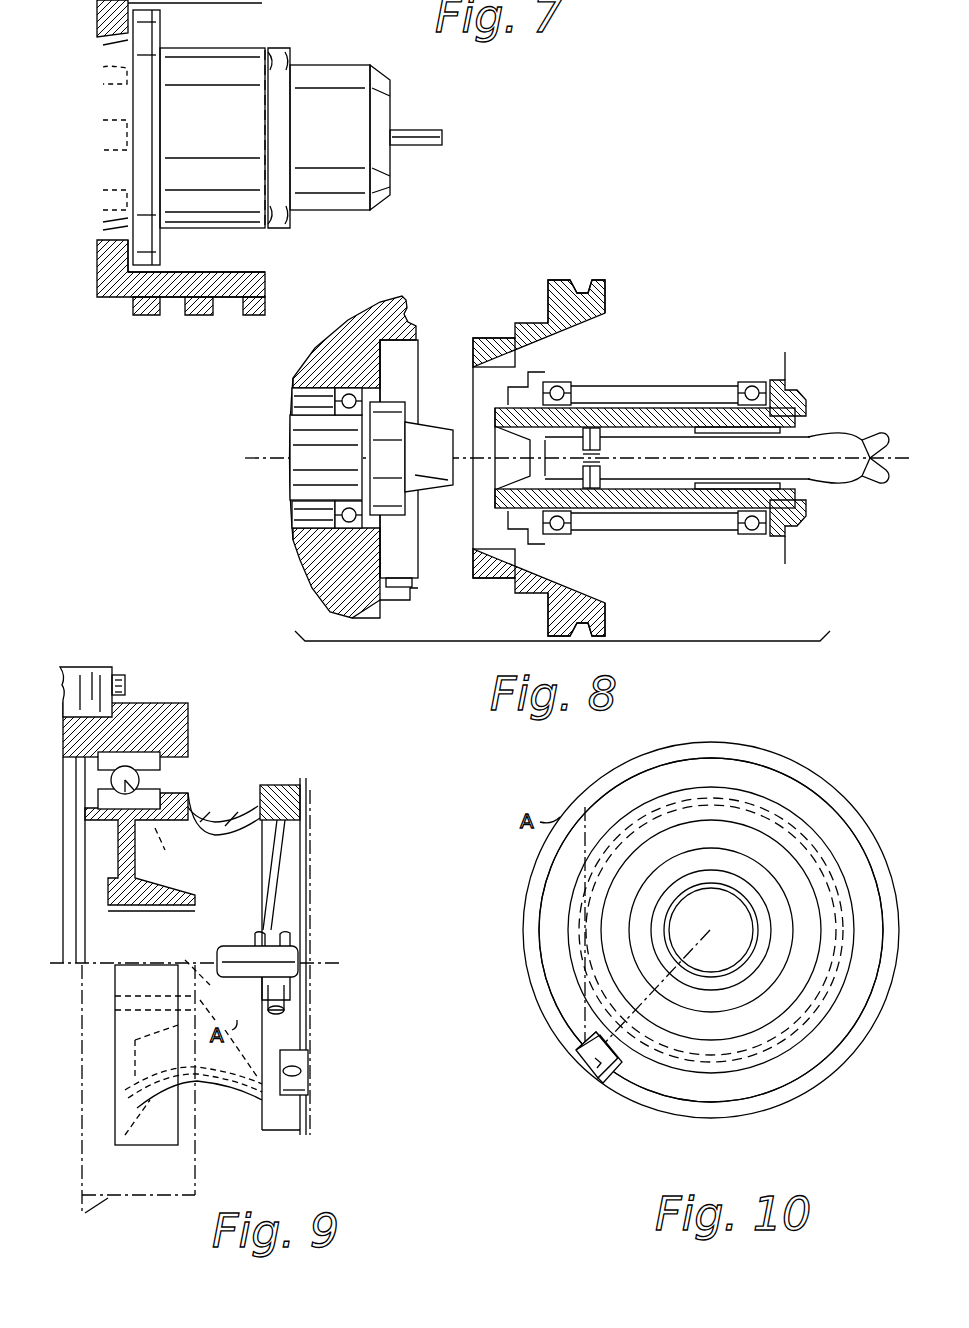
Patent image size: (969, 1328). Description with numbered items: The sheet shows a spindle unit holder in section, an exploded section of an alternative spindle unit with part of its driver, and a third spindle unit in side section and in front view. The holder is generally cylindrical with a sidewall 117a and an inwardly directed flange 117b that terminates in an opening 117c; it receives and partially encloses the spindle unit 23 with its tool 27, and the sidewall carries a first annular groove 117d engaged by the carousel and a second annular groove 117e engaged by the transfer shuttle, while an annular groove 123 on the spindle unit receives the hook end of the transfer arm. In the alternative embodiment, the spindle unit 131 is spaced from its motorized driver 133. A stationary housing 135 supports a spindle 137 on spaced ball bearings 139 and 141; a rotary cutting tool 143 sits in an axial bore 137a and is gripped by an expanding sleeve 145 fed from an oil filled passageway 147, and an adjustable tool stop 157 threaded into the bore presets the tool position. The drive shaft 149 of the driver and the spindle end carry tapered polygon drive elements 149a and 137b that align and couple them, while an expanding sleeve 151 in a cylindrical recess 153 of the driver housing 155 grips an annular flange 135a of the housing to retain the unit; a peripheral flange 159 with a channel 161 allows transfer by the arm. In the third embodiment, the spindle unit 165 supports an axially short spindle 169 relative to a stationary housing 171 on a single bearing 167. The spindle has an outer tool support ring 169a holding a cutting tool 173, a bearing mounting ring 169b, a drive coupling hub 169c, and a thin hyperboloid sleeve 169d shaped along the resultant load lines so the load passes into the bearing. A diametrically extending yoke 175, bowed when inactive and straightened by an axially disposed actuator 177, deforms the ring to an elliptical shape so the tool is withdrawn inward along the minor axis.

In FIG. 7, the spindle unit 23 is at (312, 58).
In FIG. 7, the tool 27 is at (410, 128).
In FIG. 7, the annular groove 123 is at (280, 226).
In FIG. 7, the sidewall 117a is at (245, 248).
In FIG. 7, the inwardly directed flange 117b is at (103, 262).
In FIG. 7, the opening 117c is at (115, 47).
In FIG. 7, the first annular groove 117d is at (228, 305).
In FIG. 7, the second annular groove 117e is at (183, 298).
In FIG. 8, the spindle unit 131 is at (700, 325).
In FIG. 8, the motorized driver 133 is at (412, 298).
In FIG. 8, the stationary housing 135 is at (706, 562).
In FIG. 8, the annular flange 135a is at (495, 339).
In FIG. 8, the spindle 137 is at (797, 392).
In FIG. 8, the axial bore 137a is at (668, 482).
In FIG. 8, the tapered polygon drive element 137b is at (495, 436).
In FIG. 8, the ball bearing 139 is at (555, 527).
In FIG. 8, the ball bearing 141 is at (700, 524).
In FIG. 8, the rotary cutting tool 143 is at (846, 440).
In FIG. 8, the expanding sleeve 145 is at (690, 440).
In FIG. 8, the oil filled passageway 147 is at (792, 516).
In FIG. 8, the drive shaft 149 is at (340, 447).
In FIG. 8, the tapered polygon drive element 149a is at (434, 500).
In FIG. 8, the expanding sleeve 151 is at (410, 566).
In FIG. 8, the cylindrical recess 153 is at (416, 557).
In FIG. 8, the housing 155 is at (412, 620).
In FIG. 8, the adjustable tool stop 157 is at (604, 446).
In FIG. 8, the peripheral flange 159 is at (608, 312).
In FIG. 8, the channel 161 is at (585, 292).
In FIG. 9, the spindle unit 165 is at (190, 686).
In FIG. 9, the bearing 167 is at (170, 770).
In FIG. 9, the spindle 169 is at (236, 955).
In FIG. 10, the spindle 169 is at (870, 800).
In FIG. 9, the outer tool support ring 169a is at (300, 792).
In FIG. 10, the outer tool support ring 169a is at (772, 770).
In FIG. 9, the bearing mounting ring 169b is at (167, 1145).
In FIG. 9, the drive coupling hub 169c is at (178, 832).
In FIG. 9, the hyperboloid sleeve 169d is at (203, 1083).
In FIG. 9, the stationary housing 171 is at (130, 703).
In FIG. 10, the cutting tool 173 is at (590, 1080).
In FIG. 9, the yoke 175 is at (285, 905).
In FIG. 9, the actuator 177 is at (298, 950).